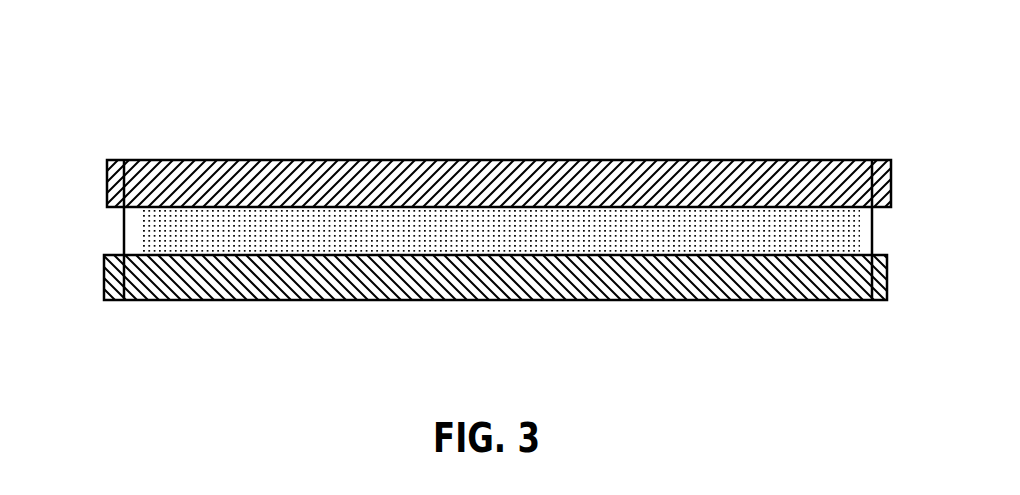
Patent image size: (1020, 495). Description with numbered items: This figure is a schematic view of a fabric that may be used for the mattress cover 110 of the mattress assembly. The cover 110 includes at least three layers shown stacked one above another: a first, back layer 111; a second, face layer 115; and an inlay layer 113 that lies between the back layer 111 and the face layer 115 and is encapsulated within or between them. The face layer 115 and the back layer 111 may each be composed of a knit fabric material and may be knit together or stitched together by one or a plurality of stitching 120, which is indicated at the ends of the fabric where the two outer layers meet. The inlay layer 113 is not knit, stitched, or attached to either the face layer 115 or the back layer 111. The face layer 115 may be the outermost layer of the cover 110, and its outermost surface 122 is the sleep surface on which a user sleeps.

The mattress cover 110 is at (195, 127).
The back layer 111 is at (445, 161).
The inlay layer 113 is at (573, 228).
The face layer 115 is at (757, 228).
The stitching 120 is at (115, 230).
The outermost surface 122 is at (792, 161).